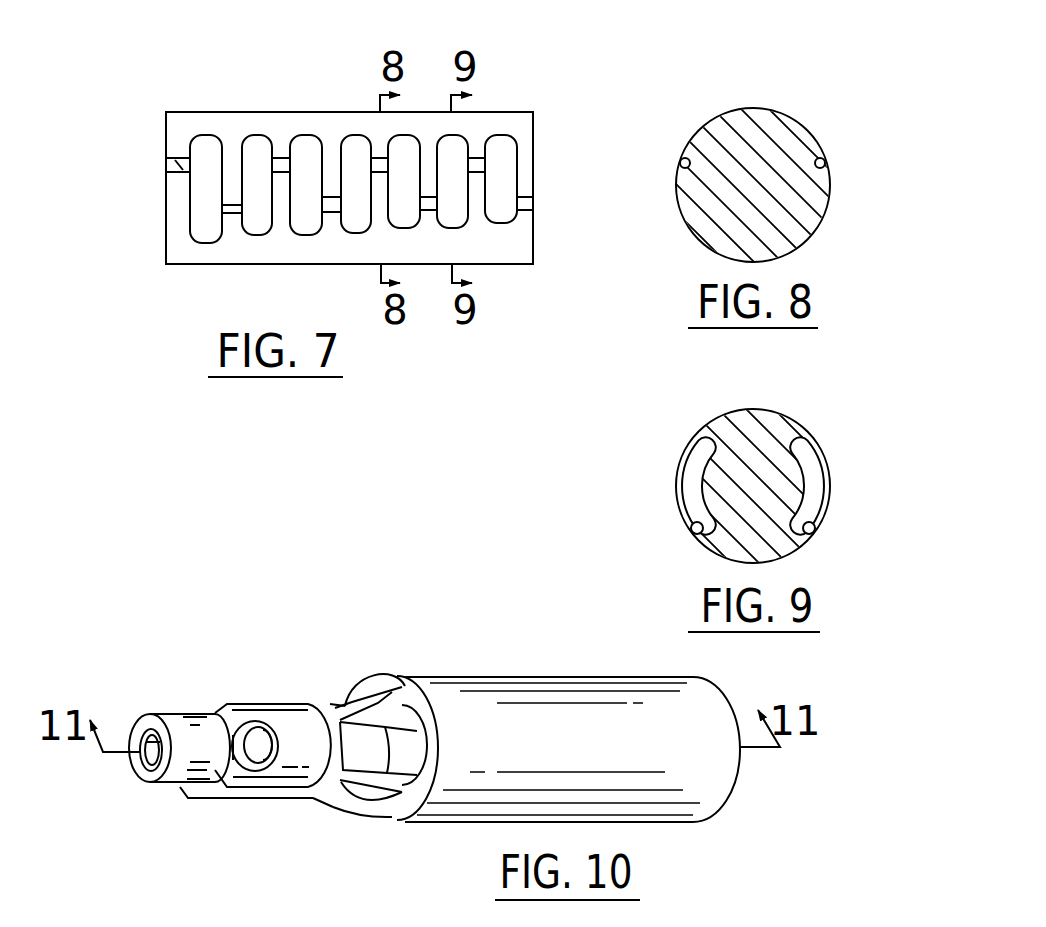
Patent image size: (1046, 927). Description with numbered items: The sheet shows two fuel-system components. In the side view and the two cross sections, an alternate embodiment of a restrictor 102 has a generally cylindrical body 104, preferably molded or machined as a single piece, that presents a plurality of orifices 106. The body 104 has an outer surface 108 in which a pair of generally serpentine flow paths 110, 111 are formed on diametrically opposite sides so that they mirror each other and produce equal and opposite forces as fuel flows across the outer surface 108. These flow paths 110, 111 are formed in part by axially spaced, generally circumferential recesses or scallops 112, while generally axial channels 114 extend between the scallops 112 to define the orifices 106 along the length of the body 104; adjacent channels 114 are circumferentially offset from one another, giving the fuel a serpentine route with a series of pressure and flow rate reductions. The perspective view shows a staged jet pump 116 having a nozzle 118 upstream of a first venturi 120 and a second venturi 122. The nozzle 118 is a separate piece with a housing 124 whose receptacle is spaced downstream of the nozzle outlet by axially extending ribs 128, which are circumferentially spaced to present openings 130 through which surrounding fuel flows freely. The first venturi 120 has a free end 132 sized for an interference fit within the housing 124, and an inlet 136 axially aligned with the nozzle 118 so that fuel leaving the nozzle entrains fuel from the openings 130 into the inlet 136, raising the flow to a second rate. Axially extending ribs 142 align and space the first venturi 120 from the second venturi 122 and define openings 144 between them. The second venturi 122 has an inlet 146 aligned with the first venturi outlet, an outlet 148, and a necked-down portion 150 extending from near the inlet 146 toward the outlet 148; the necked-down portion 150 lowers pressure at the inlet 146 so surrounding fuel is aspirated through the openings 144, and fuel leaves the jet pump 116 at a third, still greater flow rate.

In FIG. 7, the restrictor 102 is at (548, 95).
In FIG. 8, the restrictor 102 is at (838, 76).
In FIG. 9, the restrictor 102 is at (822, 386).
In FIG. 7, the body 104 is at (166, 237).
In FIG. 8, the body 104 is at (770, 108).
In FIG. 9, the body 104 is at (732, 410).
In FIG. 7, the orifices 106 is at (287, 165).
In FIG. 9, the orifices 106 is at (812, 528).
In FIG. 7, the outer surface 108 is at (195, 112).
In FIG. 8, the outer surface 108 is at (697, 237).
In FIG. 9, the outer surface 108 is at (806, 428).
In FIG. 8, the flow path 110 is at (823, 160).
In FIG. 9, the flow path 110 is at (815, 531).
In FIG. 8, the flow path 111 is at (684, 160).
In FIG. 9, the flow path 111 is at (691, 532).
In FIG. 7, the scallops 112 is at (208, 145).
In FIG. 9, the scallops 112 is at (680, 465).
In FIG. 7, the channels 114 is at (182, 163).
In FIG. 8, the channels 114 is at (826, 163).
In FIG. 10, the staged jet pump 116 is at (195, 834).
In FIG. 10, the nozzle 118 is at (180, 717).
In FIG. 10, the first venturi 120 is at (257, 723).
In FIG. 10, the second venturi 122 is at (448, 692).
In FIG. 10, the housing 124 is at (300, 737).
In FIG. 10, the ribs 128 is at (217, 707).
In FIG. 10, the openings 130 is at (207, 706).
In FIG. 10, the free end 132 is at (248, 923).
In FIG. 10, the inlet 136 is at (262, 755).
In FIG. 10, the ribs 142 is at (357, 712).
In FIG. 10, the openings 144 is at (406, 742).
In FIG. 10, the inlet 146 is at (378, 683).
In FIG. 10, the outlet 148 is at (738, 776).
In FIG. 10, the necked-down portion 150 is at (407, 705).